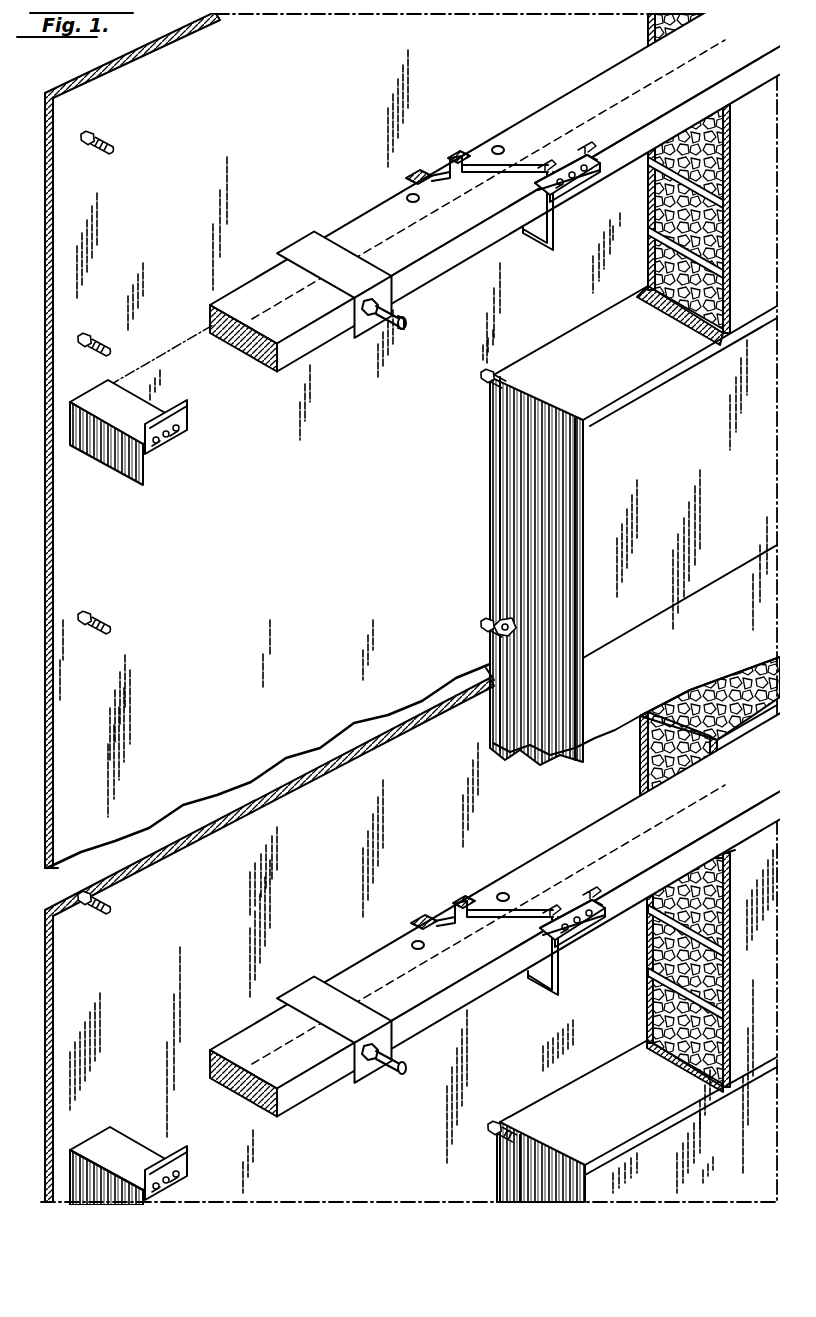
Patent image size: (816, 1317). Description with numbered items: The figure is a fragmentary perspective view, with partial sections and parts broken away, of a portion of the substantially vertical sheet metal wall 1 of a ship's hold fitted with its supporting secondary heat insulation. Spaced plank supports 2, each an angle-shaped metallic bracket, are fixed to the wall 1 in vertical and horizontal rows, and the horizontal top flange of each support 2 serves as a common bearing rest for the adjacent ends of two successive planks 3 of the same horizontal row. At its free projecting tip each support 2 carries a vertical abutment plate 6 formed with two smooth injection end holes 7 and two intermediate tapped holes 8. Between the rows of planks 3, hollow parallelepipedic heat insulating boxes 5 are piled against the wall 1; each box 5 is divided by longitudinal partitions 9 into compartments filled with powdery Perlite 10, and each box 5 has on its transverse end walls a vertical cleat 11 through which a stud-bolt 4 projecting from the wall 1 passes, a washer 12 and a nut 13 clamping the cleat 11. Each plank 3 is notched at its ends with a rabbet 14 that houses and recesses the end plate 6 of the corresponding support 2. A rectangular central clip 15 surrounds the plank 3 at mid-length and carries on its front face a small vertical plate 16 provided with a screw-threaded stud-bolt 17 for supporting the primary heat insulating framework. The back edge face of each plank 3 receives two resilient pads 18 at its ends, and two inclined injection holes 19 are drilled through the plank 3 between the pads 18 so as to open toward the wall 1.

The metallic wall 1 is at (62, 213).
The plank support 2 is at (118, 476).
The plank 3 is at (258, 292).
The stud-bolt 4 is at (106, 140).
The heat insulating box 5 is at (635, 608).
The abutment plate 6 is at (178, 445).
The injection end hole 7 is at (162, 408).
The tapped hole 8 is at (164, 457).
The longitudinal partition 9 is at (662, 716).
The Perlite 10 is at (640, 38).
The cleat 11 is at (497, 525).
The washer 12 is at (492, 640).
The nut 13 is at (482, 688).
The rabbet 14 is at (540, 168).
The clip 15 is at (313, 258).
The vertical plate 16 is at (368, 318).
The screw-threaded stud-bolt 17 is at (396, 328).
The resilient pad 18 is at (430, 162).
The injection hole 19 is at (407, 194).